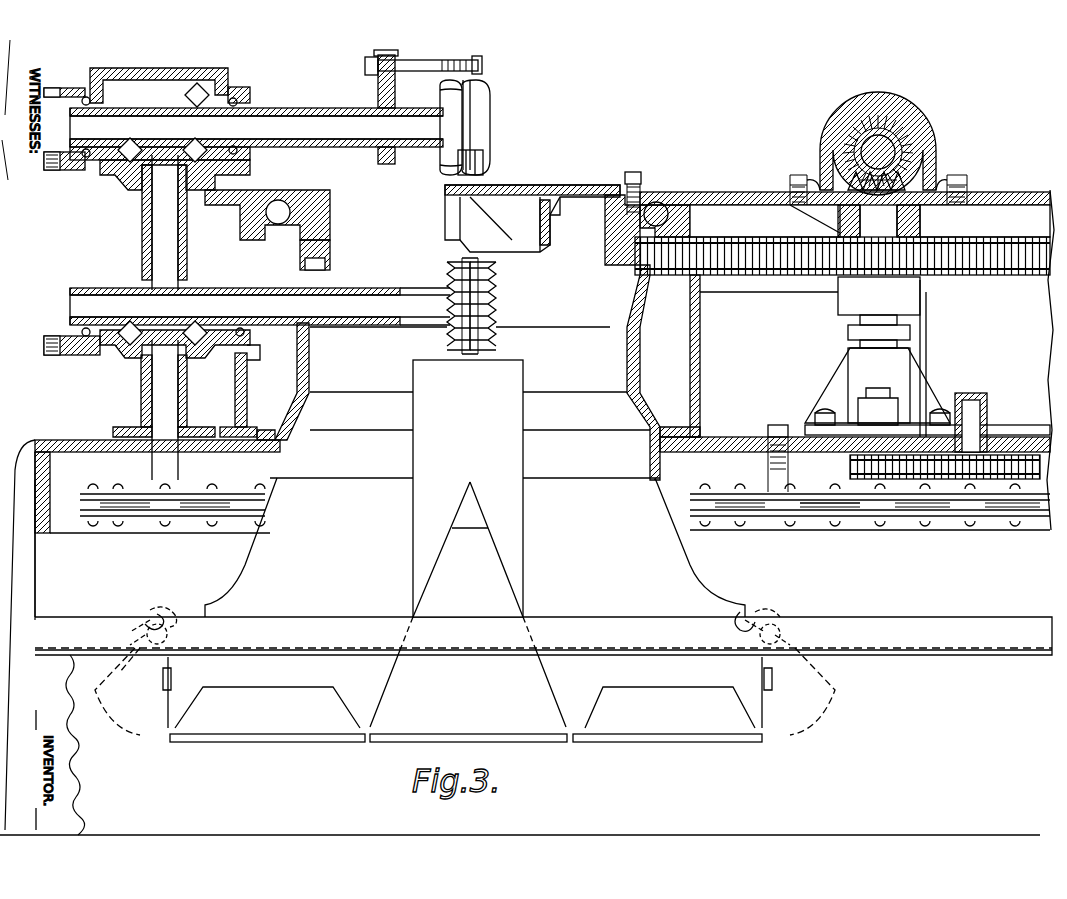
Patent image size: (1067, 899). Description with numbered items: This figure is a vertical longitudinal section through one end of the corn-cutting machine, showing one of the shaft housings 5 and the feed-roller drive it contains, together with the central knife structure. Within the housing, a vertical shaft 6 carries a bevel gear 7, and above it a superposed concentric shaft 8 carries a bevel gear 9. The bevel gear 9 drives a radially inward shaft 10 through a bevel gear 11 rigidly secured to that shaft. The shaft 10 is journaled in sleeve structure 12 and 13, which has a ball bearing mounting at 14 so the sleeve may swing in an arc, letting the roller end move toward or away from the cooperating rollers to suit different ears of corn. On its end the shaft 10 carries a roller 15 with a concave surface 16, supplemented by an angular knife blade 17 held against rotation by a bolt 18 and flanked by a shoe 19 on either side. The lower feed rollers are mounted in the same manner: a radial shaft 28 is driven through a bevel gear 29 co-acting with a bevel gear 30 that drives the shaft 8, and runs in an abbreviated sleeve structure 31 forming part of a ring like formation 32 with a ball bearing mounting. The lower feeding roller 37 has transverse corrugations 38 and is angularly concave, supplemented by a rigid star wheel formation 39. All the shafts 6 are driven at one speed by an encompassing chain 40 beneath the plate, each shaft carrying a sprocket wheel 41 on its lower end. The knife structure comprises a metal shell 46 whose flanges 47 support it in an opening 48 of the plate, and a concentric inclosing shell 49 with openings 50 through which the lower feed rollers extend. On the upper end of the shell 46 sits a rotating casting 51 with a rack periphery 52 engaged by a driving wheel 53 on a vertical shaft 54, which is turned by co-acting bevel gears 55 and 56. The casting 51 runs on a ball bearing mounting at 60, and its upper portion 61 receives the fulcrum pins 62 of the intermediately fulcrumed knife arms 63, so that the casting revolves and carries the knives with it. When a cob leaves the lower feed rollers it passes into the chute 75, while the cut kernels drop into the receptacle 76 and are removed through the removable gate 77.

The shaft housing 5 is at (72, 358).
The vertical shaft 6 is at (160, 395).
The bevel gear 7 is at (112, 362).
The superposed concentric shaft 8 is at (158, 207).
The bevel gear 9 is at (125, 178).
The shaft 10 is at (253, 130).
The bevel gear 11 is at (226, 93).
The sleeve structure 12 is at (298, 110).
The sleeve structure 13 is at (72, 110).
The ball bearing mounting 14 is at (82, 165).
The roller 15 is at (484, 135).
The concave surface 16 is at (460, 93).
The knife blade 17 is at (472, 115).
The bolt 18 is at (480, 66).
The shoe 19 is at (485, 158).
The radial shaft 28 is at (340, 300).
The bevel gear 29 is at (312, 246).
The bevel gear 30 is at (183, 253).
The sleeve structure 31 is at (298, 292).
The ring like formation 32 is at (70, 291).
The lower feeding roller 37 is at (496, 312).
The transverse corrugations 38 is at (494, 286).
The star wheel formation 39 is at (450, 320).
The chain 40 is at (218, 520).
The sprocket wheel 41 is at (143, 507).
The metal shell 46 is at (308, 385).
The flanges 47 is at (263, 430).
The opening 48 is at (272, 452).
The inclosing shell 49 is at (238, 378).
The openings 50 is at (252, 357).
The rotating casting 51 is at (690, 182).
The rack periphery 52 is at (692, 222).
The driving wheel 53 is at (965, 248).
The vertical shaft 54 is at (920, 220).
The bevel gear 55 is at (890, 186).
The bevel gear 56 is at (897, 150).
The ball bearing mounting 60 is at (662, 205).
The upper portion 61 is at (648, 198).
The fulcrum pins 62 is at (622, 176).
The knife arms 63 is at (540, 183).
The chute 75 is at (468, 543).
The receptacle 76 is at (543, 491).
The removable gate 77 is at (833, 680).